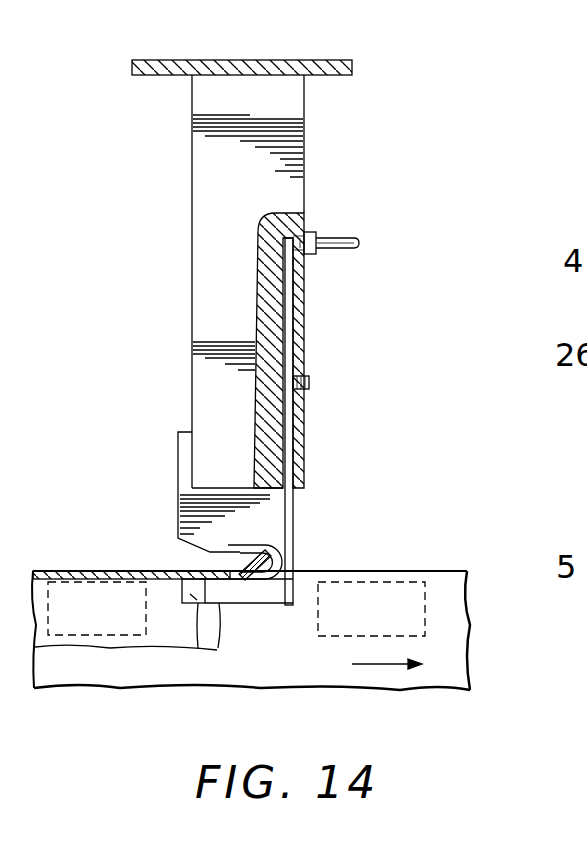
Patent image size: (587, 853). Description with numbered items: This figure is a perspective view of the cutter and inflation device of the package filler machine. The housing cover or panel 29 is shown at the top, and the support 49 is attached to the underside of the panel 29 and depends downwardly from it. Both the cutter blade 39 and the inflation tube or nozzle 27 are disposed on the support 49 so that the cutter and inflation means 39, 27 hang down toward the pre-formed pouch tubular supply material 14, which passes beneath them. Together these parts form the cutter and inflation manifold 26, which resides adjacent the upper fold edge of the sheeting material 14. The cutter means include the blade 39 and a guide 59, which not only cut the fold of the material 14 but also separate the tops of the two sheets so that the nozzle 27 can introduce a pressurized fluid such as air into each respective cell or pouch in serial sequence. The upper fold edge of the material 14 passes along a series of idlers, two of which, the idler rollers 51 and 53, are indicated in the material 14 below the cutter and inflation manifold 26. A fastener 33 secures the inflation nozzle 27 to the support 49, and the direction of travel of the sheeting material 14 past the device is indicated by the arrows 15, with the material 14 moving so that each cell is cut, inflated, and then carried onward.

The pre-formed pouch tubular supply material 14 is at (438, 625).
The direction arrows 15 is at (115, 553).
The cutter and inflation manifold 26 is at (201, 313).
The inflation tube or nozzle 27 is at (292, 505).
The housing cover or panel 29 is at (272, 70).
The bolt 33 is at (350, 240).
The cutter blade 39 is at (228, 548).
The support 49 is at (205, 223).
The idler roller 51 is at (70, 598).
The idler roller 53 is at (428, 582).
The guide 59 is at (217, 650).